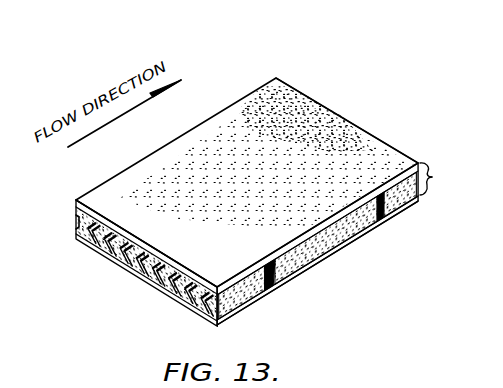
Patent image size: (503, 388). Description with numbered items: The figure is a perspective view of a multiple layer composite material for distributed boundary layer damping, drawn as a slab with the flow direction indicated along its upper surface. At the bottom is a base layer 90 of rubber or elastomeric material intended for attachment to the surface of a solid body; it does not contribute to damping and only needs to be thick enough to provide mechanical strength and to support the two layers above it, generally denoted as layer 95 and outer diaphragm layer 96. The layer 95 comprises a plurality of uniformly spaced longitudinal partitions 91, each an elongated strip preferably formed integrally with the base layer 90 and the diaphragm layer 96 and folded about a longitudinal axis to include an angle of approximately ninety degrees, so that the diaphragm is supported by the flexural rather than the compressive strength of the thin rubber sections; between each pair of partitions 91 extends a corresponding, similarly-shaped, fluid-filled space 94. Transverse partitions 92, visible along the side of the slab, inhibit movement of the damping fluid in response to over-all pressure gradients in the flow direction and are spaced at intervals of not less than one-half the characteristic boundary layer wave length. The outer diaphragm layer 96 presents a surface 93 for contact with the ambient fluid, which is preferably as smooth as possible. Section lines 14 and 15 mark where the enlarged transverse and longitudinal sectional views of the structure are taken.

The section line 14— 14 is at (161, 148).
The section line 15— 15 is at (352, 120).
The base layer 90 is at (232, 318).
The longitudinal partitions 91 is at (80, 224).
The transverse partitions 92 is at (383, 208).
The diaphragm surface 93 is at (252, 100).
The fluid-filled space 94 is at (140, 268).
The partition layer 95 is at (428, 183).
The outer diaphragm layer 96 is at (431, 166).